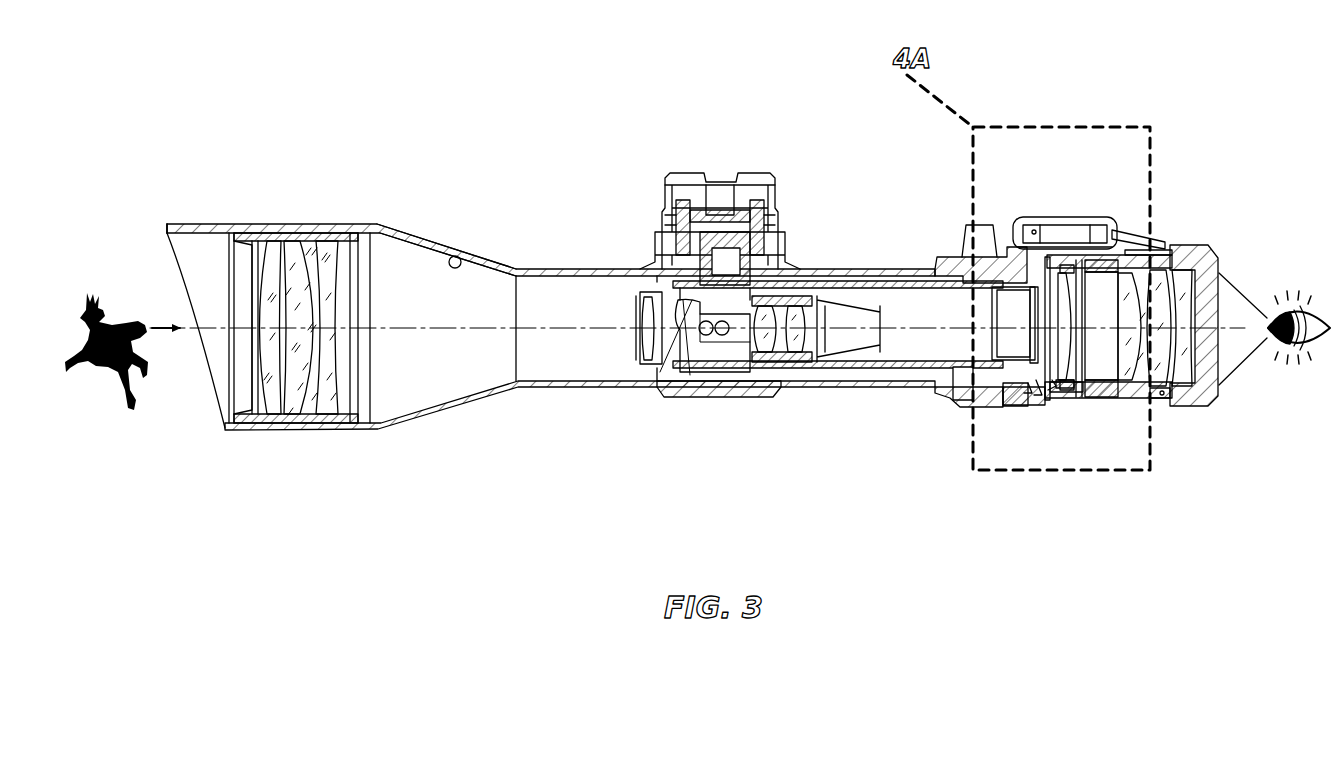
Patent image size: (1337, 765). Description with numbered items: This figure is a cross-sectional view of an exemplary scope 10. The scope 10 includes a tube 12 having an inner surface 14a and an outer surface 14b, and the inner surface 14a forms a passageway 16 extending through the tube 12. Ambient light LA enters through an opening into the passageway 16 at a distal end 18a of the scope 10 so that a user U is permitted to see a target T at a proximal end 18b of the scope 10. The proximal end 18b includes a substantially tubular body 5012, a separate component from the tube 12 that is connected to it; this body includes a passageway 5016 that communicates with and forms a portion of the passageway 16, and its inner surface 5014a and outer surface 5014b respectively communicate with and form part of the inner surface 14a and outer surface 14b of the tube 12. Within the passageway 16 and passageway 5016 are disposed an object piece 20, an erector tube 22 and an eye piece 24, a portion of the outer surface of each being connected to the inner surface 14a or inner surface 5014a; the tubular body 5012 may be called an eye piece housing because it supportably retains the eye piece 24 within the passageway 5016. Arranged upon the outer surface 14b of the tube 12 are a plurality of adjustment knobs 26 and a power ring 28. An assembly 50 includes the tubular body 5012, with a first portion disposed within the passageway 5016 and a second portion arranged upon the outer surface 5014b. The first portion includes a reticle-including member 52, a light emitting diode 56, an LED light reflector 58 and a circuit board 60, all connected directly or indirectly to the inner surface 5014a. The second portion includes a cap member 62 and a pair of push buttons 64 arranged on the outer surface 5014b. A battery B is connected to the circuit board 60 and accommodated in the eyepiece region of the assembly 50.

The scope 10 is at (218, 82).
The tube 12 is at (402, 190).
The inner surface 14a is at (462, 262).
The outer surface 14b is at (440, 236).
The passageway 16 is at (590, 297).
The distal end 18a is at (195, 398).
The proximal end 18b is at (1233, 372).
The object piece 20 is at (268, 237).
The erector tube 22 is at (862, 280).
The eye piece 24 is at (1178, 262).
The adjustment knobs 26 is at (775, 172).
The power ring 28 is at (983, 245).
The assembly 50 is at (1092, 178).
The reticle-including member 52 is at (1030, 393).
The light emitting diode 56 is at (1073, 392).
The LED light reflector 58 is at (1052, 388).
The circuit board 60 is at (1142, 232).
The cap member 62 is at (1070, 215).
The push buttons 64 is at (1178, 256).
The substantially tubular body 5012 is at (1076, 428).
The inner surface 5014a is at (1030, 392).
The outer surface 5014b is at (1040, 396).
The passageway 5016 is at (1094, 343).
The battery B is at (1030, 228).
The target T is at (105, 278).
The user U is at (1293, 280).
The ambient light LA is at (152, 330).